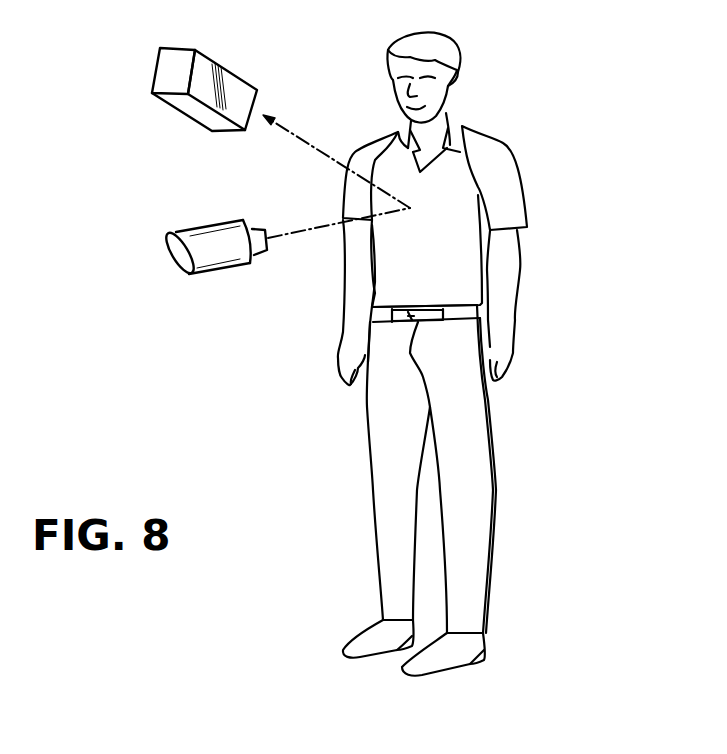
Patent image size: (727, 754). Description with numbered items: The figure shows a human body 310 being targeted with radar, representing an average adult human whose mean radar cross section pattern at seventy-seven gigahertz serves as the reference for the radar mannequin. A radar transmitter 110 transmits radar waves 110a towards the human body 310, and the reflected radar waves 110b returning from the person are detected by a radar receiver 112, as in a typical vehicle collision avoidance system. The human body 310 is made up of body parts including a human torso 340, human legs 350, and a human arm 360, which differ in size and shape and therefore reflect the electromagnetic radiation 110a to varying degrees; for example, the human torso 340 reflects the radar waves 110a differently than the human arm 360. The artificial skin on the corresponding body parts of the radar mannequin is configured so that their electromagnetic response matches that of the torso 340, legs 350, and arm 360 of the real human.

The radar receiver 112 is at (155, 70).
The radar transmitter 110 is at (200, 227).
The radar waves 110a is at (312, 228).
The reflected radar waves 110b is at (310, 143).
The human body 310 is at (477, 353).
The human torso 340 is at (452, 195).
The human legs 350 is at (475, 388).
The human arm 360 is at (512, 300).